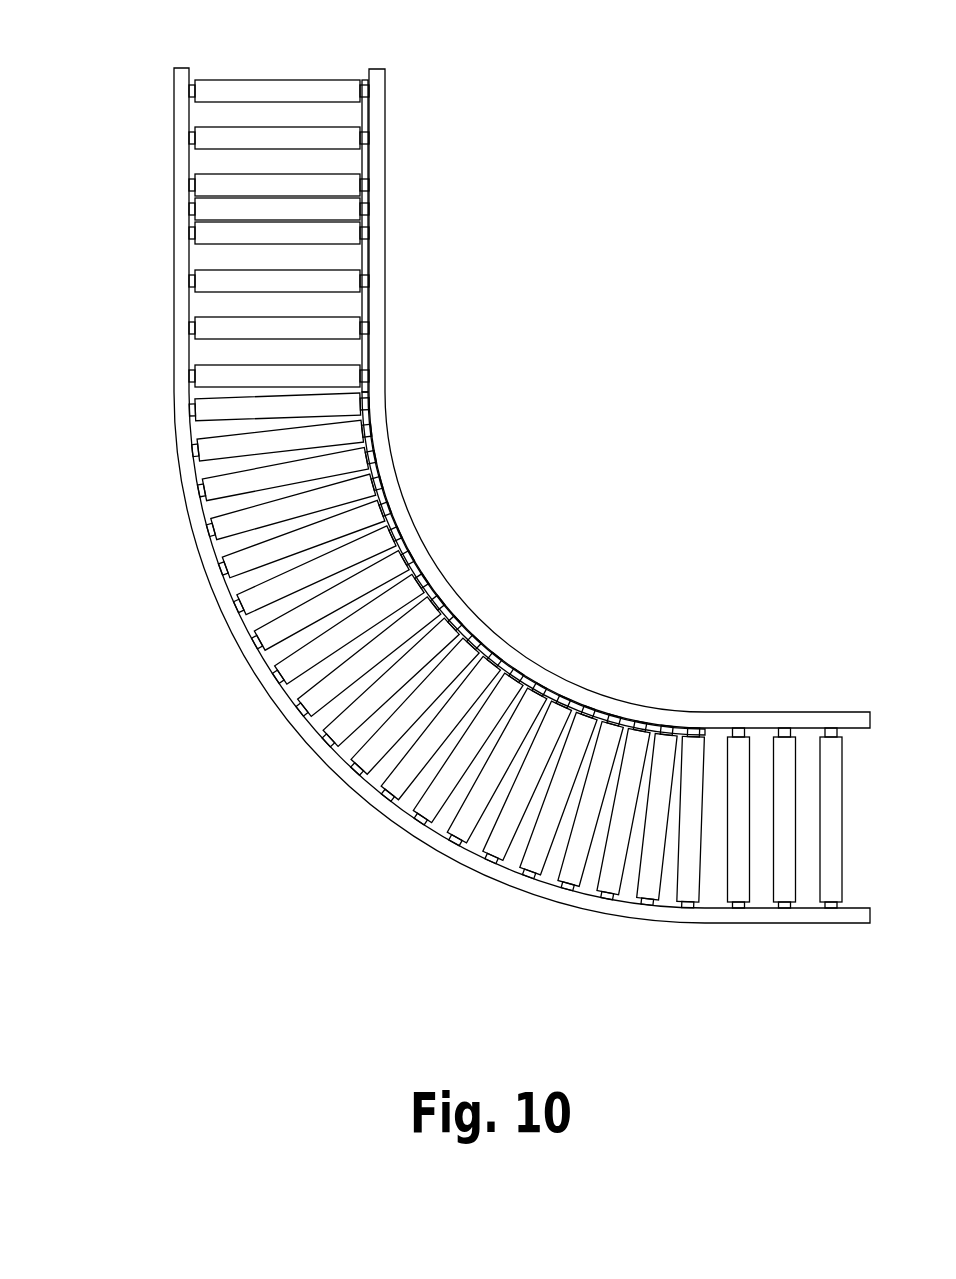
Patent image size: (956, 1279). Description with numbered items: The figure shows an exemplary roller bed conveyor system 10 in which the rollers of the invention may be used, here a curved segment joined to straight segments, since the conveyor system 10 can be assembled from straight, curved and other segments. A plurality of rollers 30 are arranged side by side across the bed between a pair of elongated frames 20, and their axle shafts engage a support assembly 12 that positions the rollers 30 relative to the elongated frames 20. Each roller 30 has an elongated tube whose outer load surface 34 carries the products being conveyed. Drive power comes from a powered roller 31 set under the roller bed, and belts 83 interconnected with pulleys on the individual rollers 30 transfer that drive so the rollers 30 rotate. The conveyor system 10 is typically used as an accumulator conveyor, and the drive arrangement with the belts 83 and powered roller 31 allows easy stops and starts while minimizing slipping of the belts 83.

The roller bed conveyor system 10 is at (464, 492).
The support assembly 12 is at (450, 460).
The elongated frame 20 is at (490, 645).
The roller 30 is at (461, 460).
The powered roller 31 is at (340, 206).
The outer load surface 34 is at (357, 438).
The belt 83 is at (368, 452).